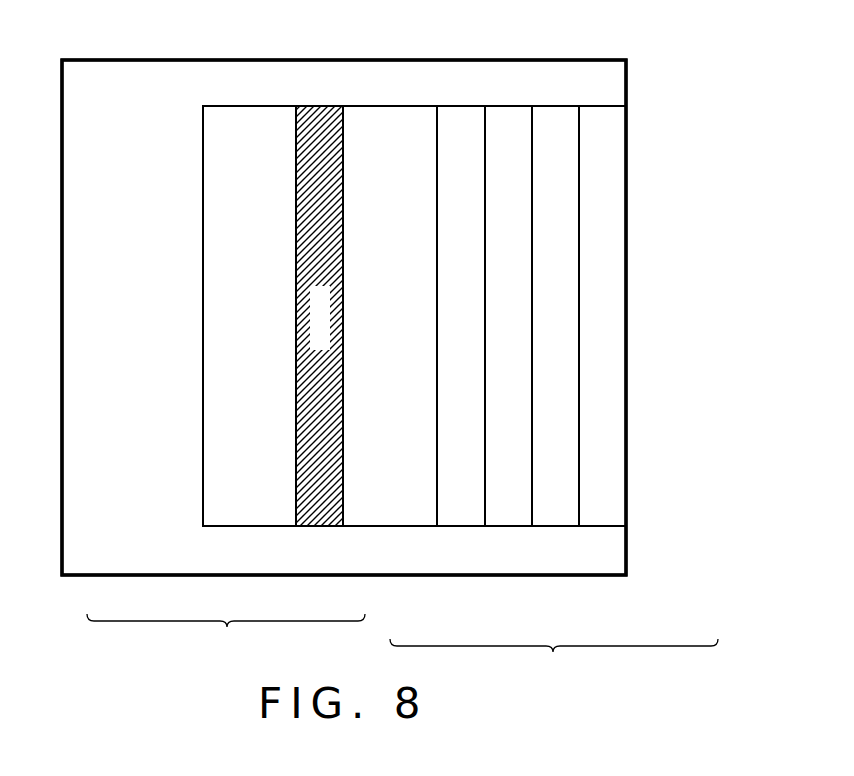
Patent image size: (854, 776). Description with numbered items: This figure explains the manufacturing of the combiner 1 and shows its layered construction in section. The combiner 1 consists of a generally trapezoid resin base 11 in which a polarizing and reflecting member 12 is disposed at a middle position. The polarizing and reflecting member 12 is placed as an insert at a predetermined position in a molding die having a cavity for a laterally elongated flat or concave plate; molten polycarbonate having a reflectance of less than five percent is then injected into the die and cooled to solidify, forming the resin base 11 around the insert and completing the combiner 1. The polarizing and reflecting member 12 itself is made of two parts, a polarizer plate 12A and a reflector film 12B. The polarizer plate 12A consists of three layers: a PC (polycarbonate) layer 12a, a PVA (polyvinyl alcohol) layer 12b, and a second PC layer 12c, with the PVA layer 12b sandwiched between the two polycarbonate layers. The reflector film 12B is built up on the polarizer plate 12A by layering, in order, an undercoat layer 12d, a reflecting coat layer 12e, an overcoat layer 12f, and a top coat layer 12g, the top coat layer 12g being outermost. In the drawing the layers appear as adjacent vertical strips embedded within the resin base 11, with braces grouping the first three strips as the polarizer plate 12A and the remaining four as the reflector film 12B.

The combiner 1 is at (343, 45).
The resin base 11 is at (221, 55).
The polarizing and reflecting member 12 is at (630, 226).
The polarizer plate 12A is at (226, 637).
The PC layer 12a is at (245, 526).
The PVA layer 12b is at (320, 526).
The PC layer 12c is at (380, 526).
The reflector film 12B is at (554, 662).
The undercoat layer 12d is at (462, 520).
The reflecting coat layer 12e is at (510, 518).
The overcoat layer 12f is at (557, 522).
The top coat layer 12g is at (597, 520).